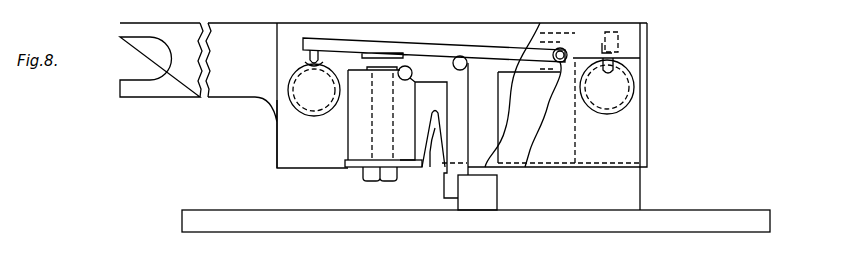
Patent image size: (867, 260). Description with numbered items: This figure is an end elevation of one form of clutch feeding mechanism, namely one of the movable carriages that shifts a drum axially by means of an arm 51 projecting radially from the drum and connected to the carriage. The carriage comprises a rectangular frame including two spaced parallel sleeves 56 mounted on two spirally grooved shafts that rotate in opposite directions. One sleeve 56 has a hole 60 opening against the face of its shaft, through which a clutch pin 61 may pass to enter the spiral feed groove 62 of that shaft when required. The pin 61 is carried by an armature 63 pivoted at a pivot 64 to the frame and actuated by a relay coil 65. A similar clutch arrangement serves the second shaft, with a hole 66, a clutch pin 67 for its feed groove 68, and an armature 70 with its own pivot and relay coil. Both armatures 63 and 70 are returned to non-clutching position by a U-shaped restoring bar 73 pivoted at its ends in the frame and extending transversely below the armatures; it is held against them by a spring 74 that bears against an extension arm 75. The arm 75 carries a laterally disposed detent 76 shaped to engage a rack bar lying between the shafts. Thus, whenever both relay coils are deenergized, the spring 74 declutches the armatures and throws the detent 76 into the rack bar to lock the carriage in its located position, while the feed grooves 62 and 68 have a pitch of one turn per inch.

The arm 51 is at (182, 78).
The sleeve 56 is at (293, 103).
The hole 60 is at (303, 63).
The clutch pin 61 is at (327, 50).
The spiral feed groove 62 is at (314, 92).
The armature 63 is at (427, 50).
The pivot 64 is at (565, 48).
The relay coil 65 is at (355, 133).
The hole 66 is at (610, 58).
The clutch pin 67 is at (612, 46).
The feed groove 68 is at (609, 77).
The armature 70 is at (614, 32).
The U-shaped restoring bar 73 is at (467, 64).
The spring 74 is at (430, 150).
The extension arm 75 is at (457, 152).
The detent 76 is at (465, 177).